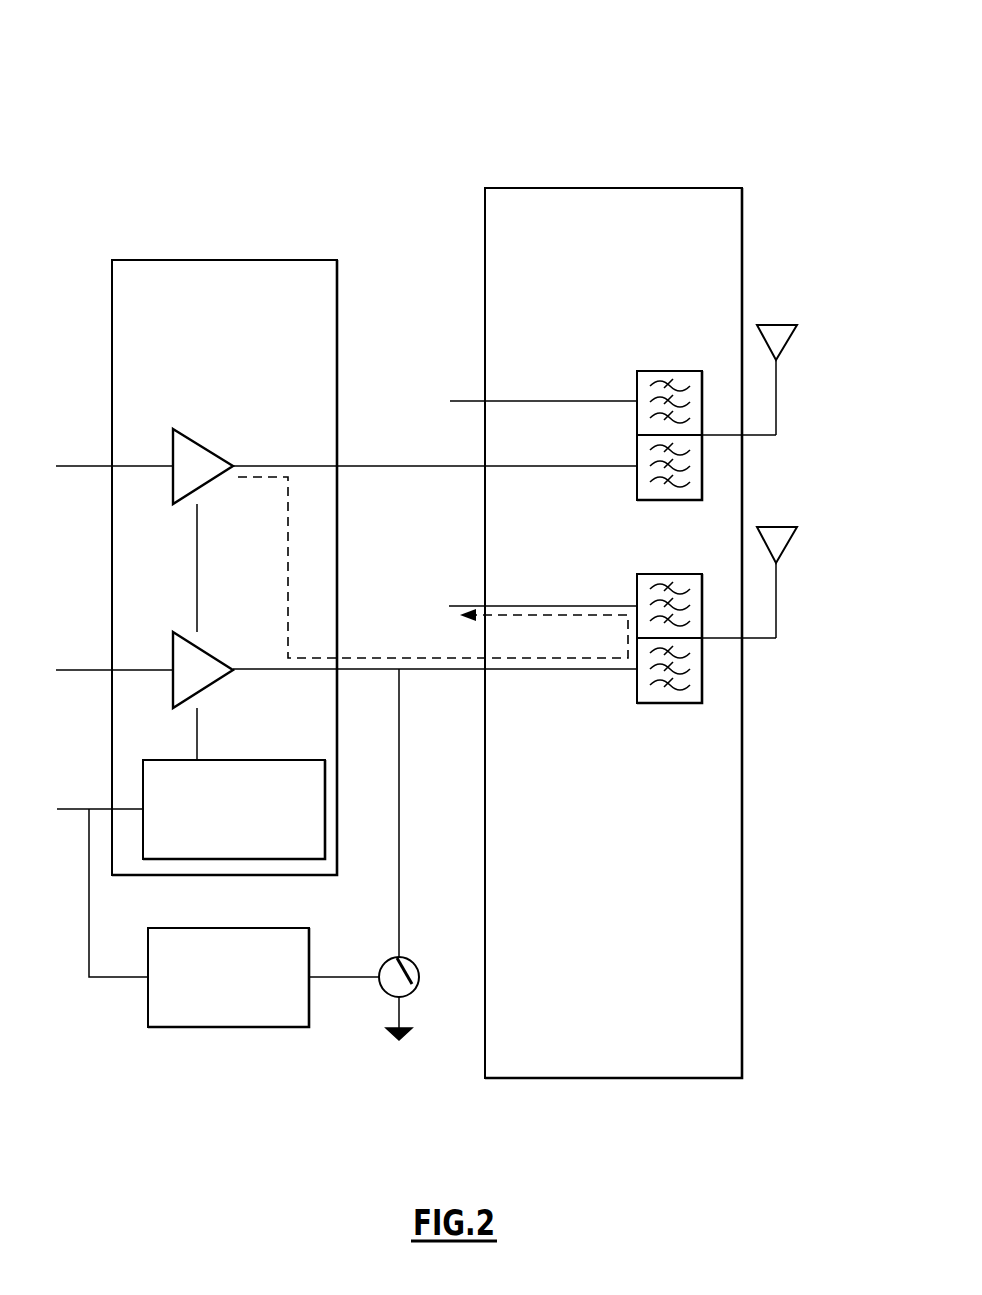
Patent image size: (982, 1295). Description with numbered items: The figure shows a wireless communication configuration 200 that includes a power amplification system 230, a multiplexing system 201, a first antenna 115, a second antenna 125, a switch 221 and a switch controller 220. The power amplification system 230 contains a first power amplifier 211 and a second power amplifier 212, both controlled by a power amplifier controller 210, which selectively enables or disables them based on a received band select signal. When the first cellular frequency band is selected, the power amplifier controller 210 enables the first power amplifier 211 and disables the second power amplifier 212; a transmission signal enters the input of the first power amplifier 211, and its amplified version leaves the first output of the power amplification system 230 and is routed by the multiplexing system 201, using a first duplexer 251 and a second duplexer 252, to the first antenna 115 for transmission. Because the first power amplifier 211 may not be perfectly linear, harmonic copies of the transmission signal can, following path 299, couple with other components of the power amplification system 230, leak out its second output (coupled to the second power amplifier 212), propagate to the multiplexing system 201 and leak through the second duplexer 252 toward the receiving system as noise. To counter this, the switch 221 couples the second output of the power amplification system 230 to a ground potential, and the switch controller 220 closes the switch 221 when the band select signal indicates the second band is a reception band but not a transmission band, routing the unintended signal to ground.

The wireless communication configuration 200 is at (473, 83).
The multiplexing system 201 is at (628, 188).
The power amplification system 230 is at (248, 260).
The first power amplifier 211 is at (193, 440).
The second power amplifier 212 is at (213, 656).
The power amplifier controller 210 is at (230, 760).
The switch controller 220 is at (208, 1027).
The switch 221 is at (412, 962).
The first duplexer 251 is at (668, 371).
The second duplexer 252 is at (668, 574).
The first antenna 115 is at (786, 342).
The second antenna 125 is at (786, 545).
The path 299 is at (362, 657).